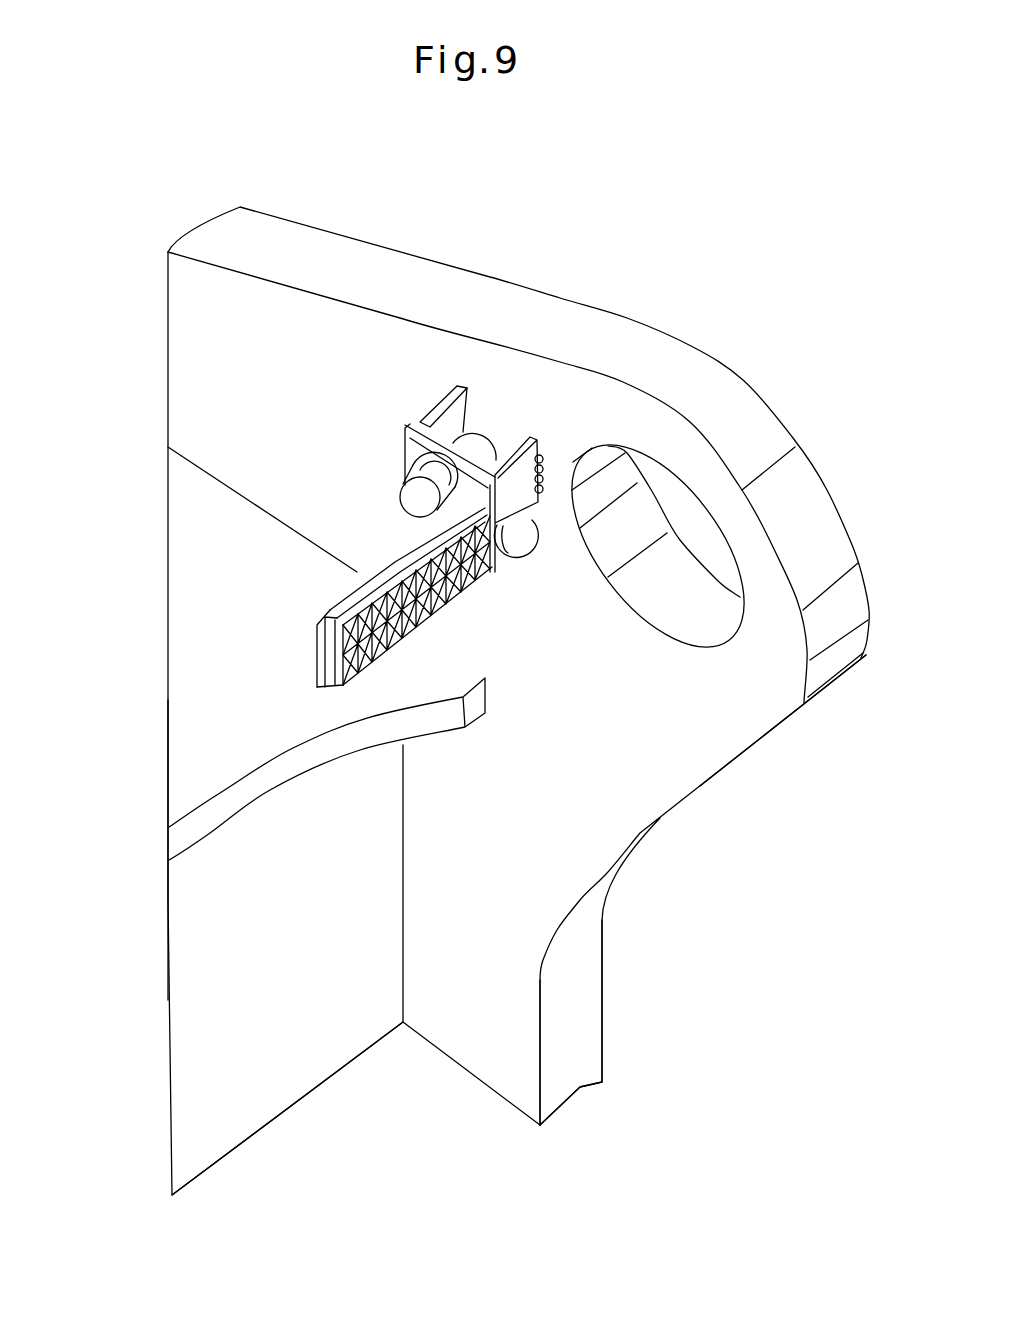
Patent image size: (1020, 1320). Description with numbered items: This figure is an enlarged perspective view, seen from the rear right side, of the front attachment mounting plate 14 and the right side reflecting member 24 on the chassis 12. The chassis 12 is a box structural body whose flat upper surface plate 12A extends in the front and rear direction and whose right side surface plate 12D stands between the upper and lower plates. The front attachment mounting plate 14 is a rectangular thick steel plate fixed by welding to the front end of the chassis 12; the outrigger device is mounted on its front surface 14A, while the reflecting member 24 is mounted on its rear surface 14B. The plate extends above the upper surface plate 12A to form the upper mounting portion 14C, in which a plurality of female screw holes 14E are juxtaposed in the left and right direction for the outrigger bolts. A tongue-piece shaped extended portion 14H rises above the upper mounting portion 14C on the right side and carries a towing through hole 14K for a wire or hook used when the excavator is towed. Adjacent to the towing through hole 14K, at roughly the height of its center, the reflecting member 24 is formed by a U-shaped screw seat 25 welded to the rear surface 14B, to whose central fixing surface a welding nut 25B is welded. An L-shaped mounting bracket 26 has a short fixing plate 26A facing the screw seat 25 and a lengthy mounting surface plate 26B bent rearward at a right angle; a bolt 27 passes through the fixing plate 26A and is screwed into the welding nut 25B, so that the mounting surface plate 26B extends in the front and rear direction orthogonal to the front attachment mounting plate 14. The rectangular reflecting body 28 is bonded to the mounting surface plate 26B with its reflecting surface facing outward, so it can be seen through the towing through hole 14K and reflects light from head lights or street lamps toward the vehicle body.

The chassis 12 is at (342, 1068).
The upper surface plate 12A is at (220, 742).
The right side surface plate 12D is at (260, 1087).
The front attachment mounting plate 14 is at (327, 252).
The front surface 14A is at (603, 993).
The rear surface 14B is at (223, 393).
The upper mounting portion 14C is at (193, 325).
The female screw holes 14E is at (517, 540).
The extended portion 14H is at (710, 727).
The towing through hole 14K is at (673, 587).
The reflecting member 24 is at (398, 463).
The screw seat 25 is at (445, 393).
The welding nut 25B is at (478, 443).
The mounting bracket 26 is at (383, 572).
The fixing plate 26A is at (417, 438).
The mounting surface plate 26B is at (337, 597).
The bolt 27 is at (420, 502).
The reflecting body 28 is at (448, 590).